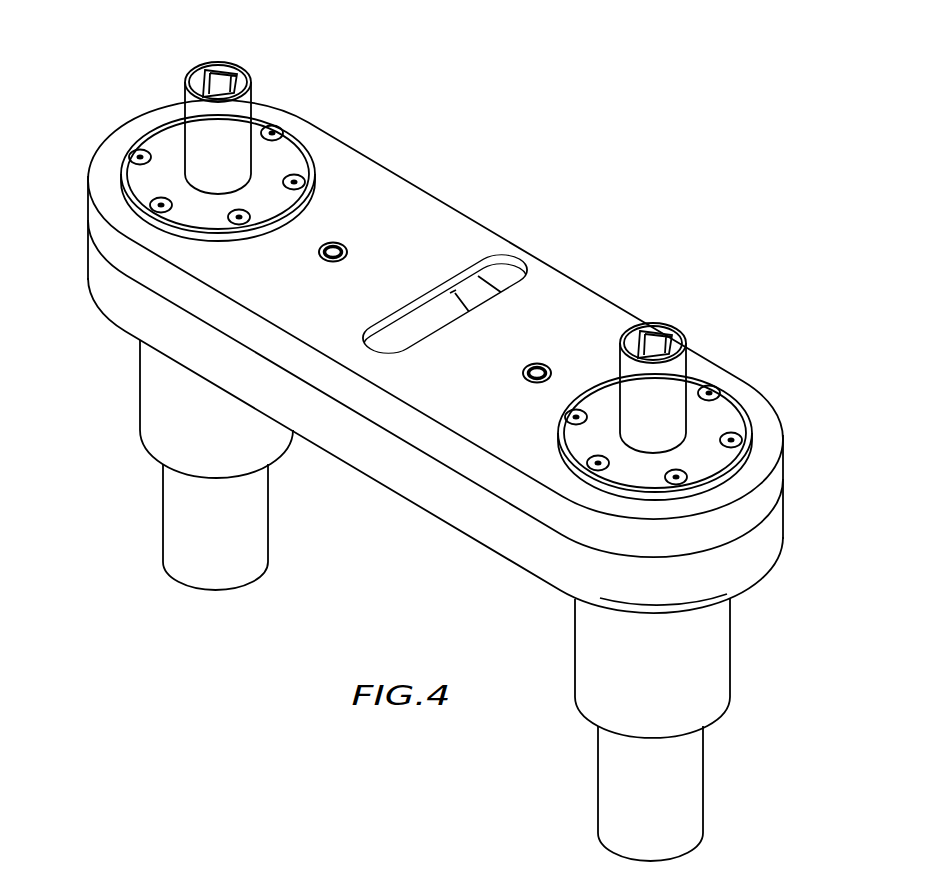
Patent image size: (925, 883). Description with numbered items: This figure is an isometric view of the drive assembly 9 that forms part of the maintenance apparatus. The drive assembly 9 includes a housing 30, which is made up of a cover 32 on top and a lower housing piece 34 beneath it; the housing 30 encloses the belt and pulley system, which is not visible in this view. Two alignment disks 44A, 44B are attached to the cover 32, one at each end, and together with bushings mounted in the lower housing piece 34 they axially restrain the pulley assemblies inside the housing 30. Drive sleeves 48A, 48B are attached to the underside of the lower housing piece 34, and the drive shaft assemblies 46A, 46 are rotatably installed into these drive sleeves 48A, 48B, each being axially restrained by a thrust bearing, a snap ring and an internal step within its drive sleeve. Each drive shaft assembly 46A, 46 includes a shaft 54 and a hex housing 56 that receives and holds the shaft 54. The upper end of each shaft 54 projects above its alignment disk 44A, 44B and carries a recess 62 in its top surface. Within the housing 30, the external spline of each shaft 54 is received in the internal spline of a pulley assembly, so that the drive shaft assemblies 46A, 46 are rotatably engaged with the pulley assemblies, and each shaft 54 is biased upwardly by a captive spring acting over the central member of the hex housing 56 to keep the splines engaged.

The drive assembly 9 is at (465, 182).
The housing 30 is at (435, 356).
The cover 32 is at (547, 293).
The lower housing piece 34 is at (378, 462).
The alignment disk 44A is at (297, 157).
The alignment disk 44B is at (732, 420).
The drive assembly 46 is at (681, 668).
The drive shaft assembly 46A is at (165, 416).
The drive sleeve 48A is at (148, 402).
The drive sleeve 48B is at (715, 632).
The shaft 54 is at (238, 112).
The hex housing 56 is at (177, 542).
The recess 62 is at (222, 78).